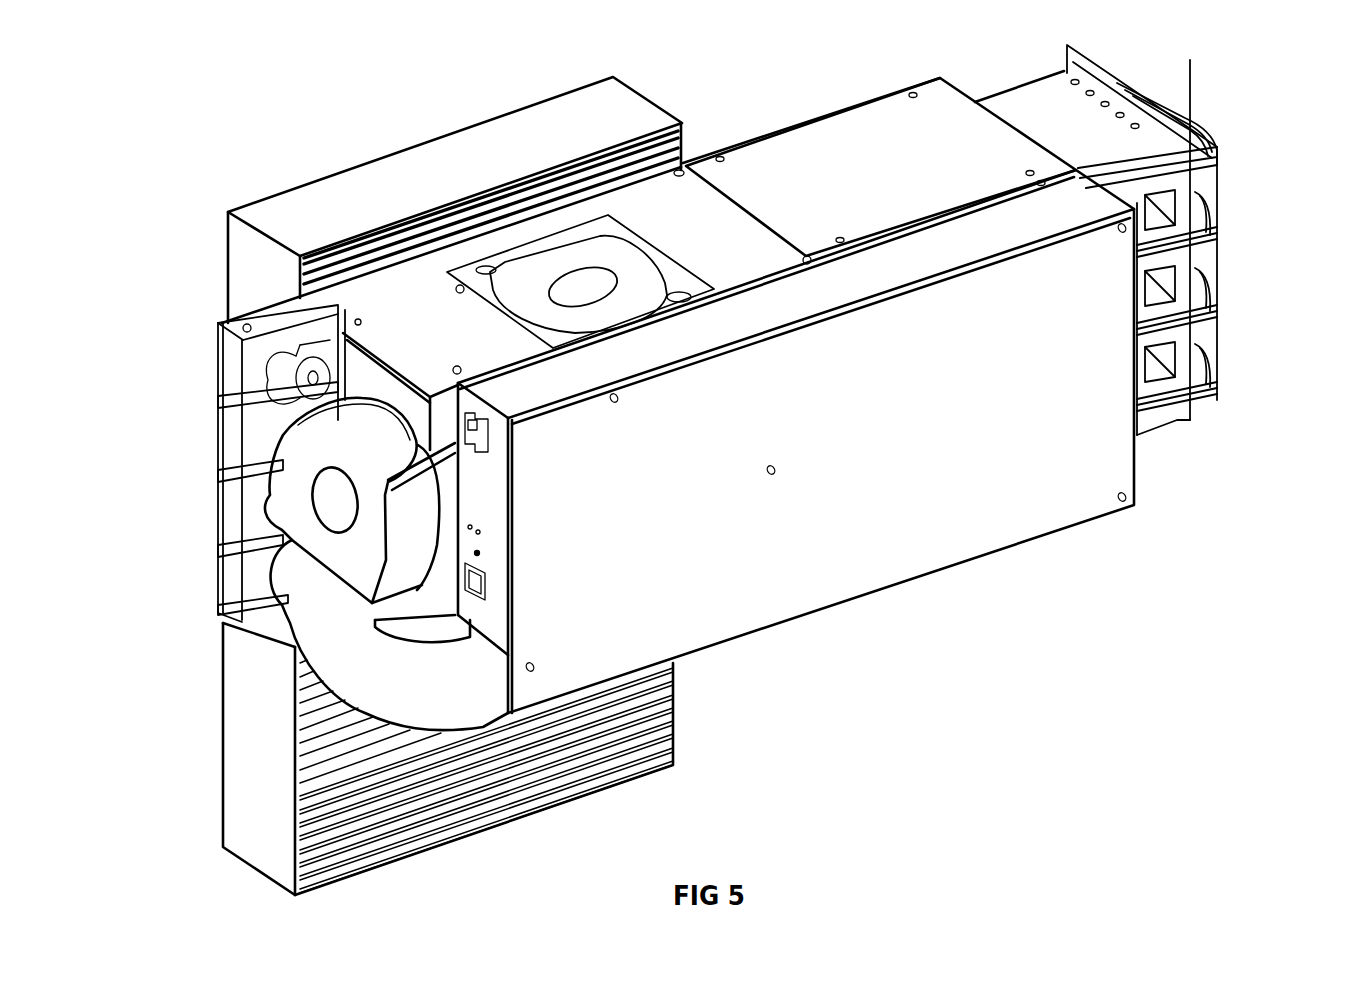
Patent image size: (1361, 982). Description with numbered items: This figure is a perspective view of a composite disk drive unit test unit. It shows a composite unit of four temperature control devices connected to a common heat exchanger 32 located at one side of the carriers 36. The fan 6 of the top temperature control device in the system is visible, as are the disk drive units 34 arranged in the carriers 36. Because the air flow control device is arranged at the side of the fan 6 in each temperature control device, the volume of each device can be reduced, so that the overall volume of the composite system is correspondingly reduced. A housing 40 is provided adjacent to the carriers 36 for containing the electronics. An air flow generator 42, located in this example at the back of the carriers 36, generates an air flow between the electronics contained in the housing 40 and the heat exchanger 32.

The fan 6 is at (603, 288).
The heat exchanger 32 is at (290, 225).
The disk drive units 34 is at (1053, 127).
The carriers 36 is at (1213, 165).
The housing 40 is at (742, 562).
The air flow generator 42 is at (323, 480).